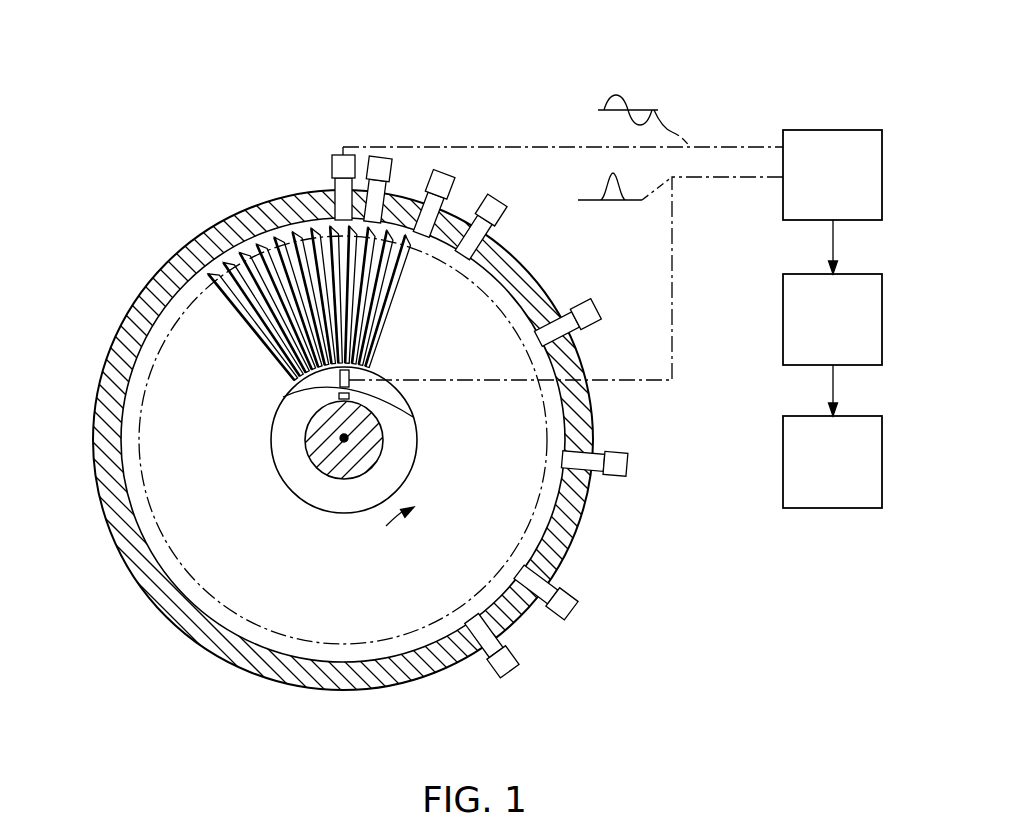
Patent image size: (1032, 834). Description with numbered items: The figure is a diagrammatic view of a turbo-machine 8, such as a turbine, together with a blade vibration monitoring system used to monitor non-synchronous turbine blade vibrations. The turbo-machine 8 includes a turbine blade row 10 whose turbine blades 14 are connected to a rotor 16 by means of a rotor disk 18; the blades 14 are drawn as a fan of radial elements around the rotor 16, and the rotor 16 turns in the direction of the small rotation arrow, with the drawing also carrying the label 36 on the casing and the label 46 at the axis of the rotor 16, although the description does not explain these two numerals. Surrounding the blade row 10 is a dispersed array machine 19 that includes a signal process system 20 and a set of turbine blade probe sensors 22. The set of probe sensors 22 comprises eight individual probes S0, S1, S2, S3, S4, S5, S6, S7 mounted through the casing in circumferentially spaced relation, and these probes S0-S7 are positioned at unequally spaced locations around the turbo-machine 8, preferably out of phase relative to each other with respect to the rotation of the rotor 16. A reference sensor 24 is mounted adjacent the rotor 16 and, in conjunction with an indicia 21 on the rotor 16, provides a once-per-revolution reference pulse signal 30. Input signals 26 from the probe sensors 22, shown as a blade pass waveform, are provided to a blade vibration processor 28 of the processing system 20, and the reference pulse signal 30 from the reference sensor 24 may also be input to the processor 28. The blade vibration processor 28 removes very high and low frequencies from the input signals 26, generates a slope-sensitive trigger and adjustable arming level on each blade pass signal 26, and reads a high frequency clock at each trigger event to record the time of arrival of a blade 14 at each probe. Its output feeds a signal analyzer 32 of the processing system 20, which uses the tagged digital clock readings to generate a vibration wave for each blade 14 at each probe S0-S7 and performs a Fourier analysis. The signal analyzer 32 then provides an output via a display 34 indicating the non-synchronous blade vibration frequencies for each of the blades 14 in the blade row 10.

The turbo-machine 8 is at (313, 417).
The turbine blade row 10 is at (325, 304).
The turbine blades 14 is at (283, 310).
The rotor 16 is at (312, 438).
The rotor disk 18 is at (312, 512).
The dispersed array machine 19 is at (563, 194).
The signal process system 20 is at (857, 319).
The indicia 21 is at (413, 417).
The set of turbine blade probe sensors 22 is at (434, 391).
The reference sensor 24 is at (283, 397).
The input signals 26 is at (608, 97).
The blade vibration processor 28 is at (847, 190).
The reference pulse signal 30 is at (600, 198).
The signal analyzer 32 is at (847, 332).
The display 34 is at (847, 475).
The housing wall 36 is at (176, 262).
The rotation axis 46 is at (344, 442).
The probe S0 is at (336, 152).
The probe S1 is at (382, 152).
The probe S2 is at (440, 170).
The probe S3 is at (495, 196).
The probe S4 is at (594, 308).
The probe S5 is at (623, 470).
The probe S6 is at (570, 612).
The probe S7 is at (512, 672).